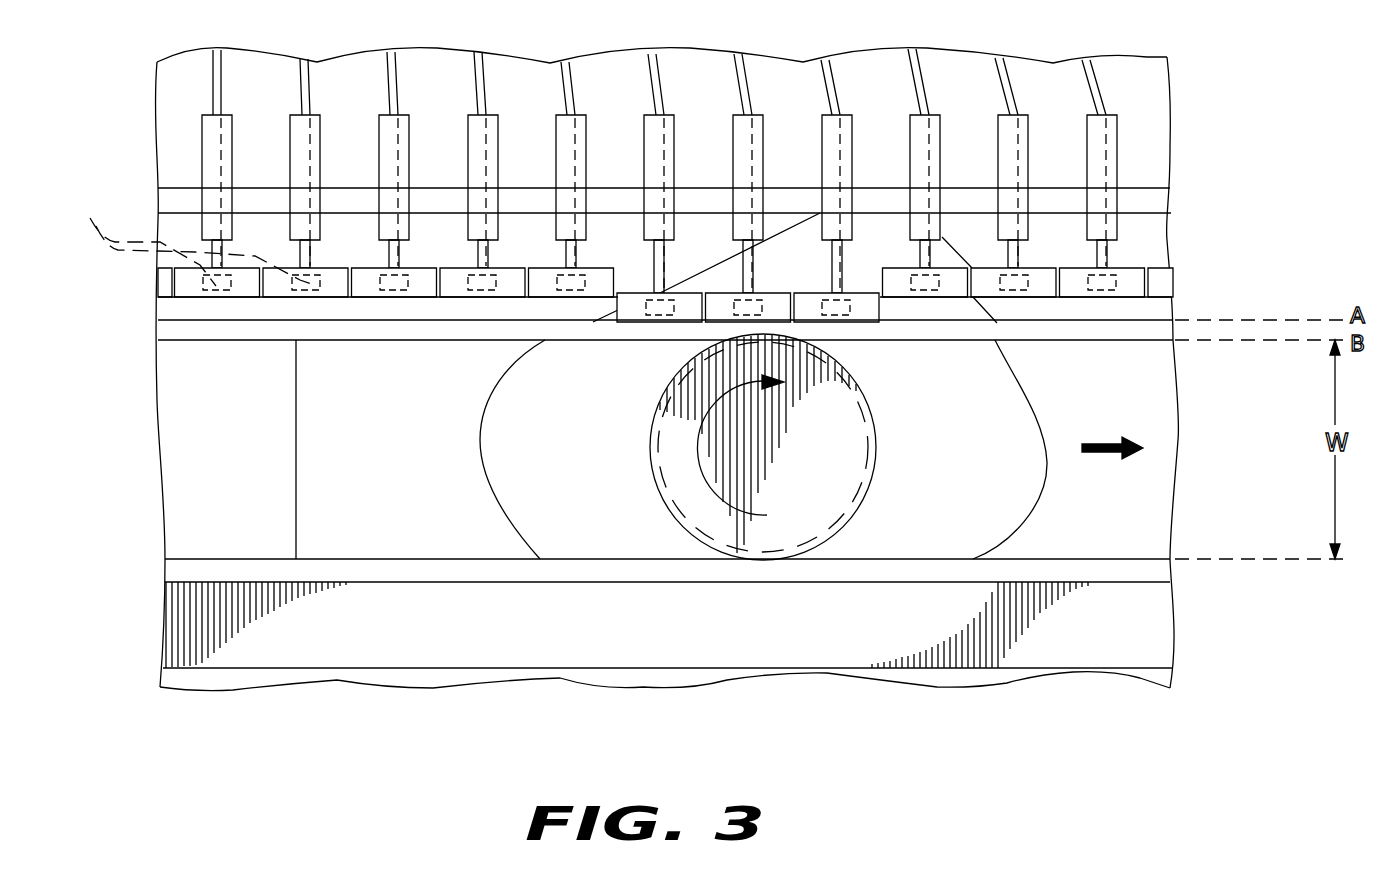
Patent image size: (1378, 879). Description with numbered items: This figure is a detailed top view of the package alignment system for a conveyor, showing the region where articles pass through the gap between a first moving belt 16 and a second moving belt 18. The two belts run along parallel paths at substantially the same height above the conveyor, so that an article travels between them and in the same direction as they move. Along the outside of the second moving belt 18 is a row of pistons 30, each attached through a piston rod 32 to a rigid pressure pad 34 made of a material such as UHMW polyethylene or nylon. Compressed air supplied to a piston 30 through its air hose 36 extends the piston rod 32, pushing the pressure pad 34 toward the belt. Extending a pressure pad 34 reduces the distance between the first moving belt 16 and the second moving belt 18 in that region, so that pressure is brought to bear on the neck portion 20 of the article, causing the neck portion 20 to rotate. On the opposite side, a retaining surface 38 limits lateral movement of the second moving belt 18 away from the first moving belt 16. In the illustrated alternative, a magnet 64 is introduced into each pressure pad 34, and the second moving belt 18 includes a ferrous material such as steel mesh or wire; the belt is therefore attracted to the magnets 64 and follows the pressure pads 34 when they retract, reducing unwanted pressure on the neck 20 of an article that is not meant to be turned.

The first moving belt 16 is at (457, 563).
The second moving belt 18 is at (178, 328).
The neck portion 20 is at (845, 528).
The piston 30 is at (1103, 158).
The piston rod 32 is at (1103, 253).
The pressure pad 34 is at (1165, 278).
The air hose 36 is at (1092, 92).
The retaining surface 38 is at (633, 635).
The magnet 64 is at (191, 236).